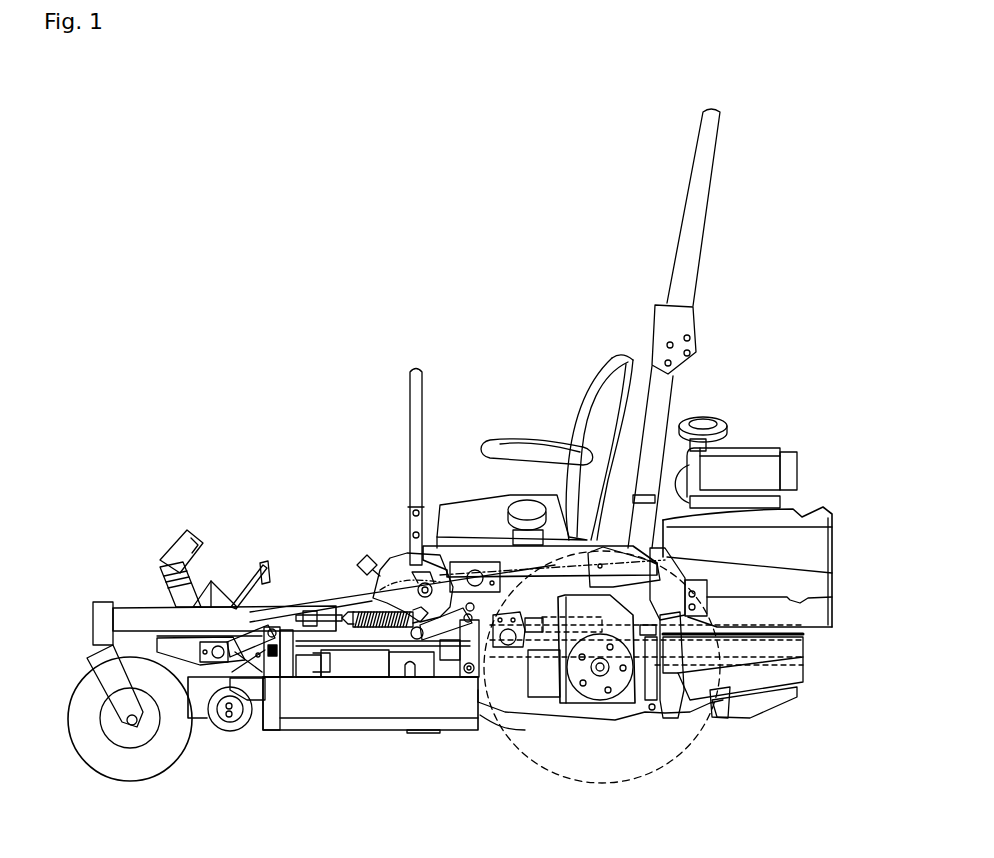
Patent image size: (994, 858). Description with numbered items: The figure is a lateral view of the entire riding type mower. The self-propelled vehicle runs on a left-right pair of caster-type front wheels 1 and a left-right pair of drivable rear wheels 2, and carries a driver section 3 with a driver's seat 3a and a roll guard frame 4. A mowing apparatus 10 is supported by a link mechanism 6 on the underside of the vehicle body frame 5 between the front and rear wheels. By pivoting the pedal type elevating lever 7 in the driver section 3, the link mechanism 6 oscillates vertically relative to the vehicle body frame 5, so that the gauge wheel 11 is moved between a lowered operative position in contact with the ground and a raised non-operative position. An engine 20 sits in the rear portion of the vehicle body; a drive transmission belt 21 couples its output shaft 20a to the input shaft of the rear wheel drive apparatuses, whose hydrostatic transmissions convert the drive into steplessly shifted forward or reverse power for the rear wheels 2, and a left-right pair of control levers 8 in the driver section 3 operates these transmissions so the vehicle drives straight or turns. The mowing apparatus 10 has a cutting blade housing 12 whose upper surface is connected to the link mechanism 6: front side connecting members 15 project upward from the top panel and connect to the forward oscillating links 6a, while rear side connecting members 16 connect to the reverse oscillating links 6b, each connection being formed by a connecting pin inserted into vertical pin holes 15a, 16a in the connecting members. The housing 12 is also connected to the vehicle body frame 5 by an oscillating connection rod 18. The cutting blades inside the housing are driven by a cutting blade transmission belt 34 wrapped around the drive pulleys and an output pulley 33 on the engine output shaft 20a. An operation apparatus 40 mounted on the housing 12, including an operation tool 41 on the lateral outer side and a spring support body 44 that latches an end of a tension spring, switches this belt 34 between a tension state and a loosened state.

The front wheels 1 is at (70, 719).
The rear wheels 2 is at (690, 748).
The driver section 3 is at (448, 310).
The driver's seat 3a is at (602, 358).
The roll guard frame 4 is at (700, 218).
The vehicle body frame 5 is at (278, 614).
The link mechanism 6 is at (260, 626).
The forward oscillating links 6a is at (234, 640).
The reverse oscillating links 6b is at (412, 578).
The pedal type elevating lever 7 is at (182, 542).
The control levers 8 is at (409, 391).
The mowing apparatus 10 is at (376, 737).
The gauge wheel 11 is at (226, 733).
The cutting blade housing 12 is at (330, 707).
The front side connecting members 15 is at (275, 700).
The pin hole 15a is at (276, 667).
The rear side connecting members 16 is at (478, 657).
The pin hole 16a is at (486, 600).
The oscillating connection rod 18 is at (557, 718).
The engine 20 is at (794, 524).
The output shaft 20a is at (748, 700).
The drive transmission belt 21 is at (647, 583).
The output pulley 33 is at (804, 677).
The cutting blade transmission belt 34 is at (690, 668).
The operation apparatus 40 is at (456, 680).
The operation tool 41 is at (460, 672).
The spring support body 44 is at (469, 676).